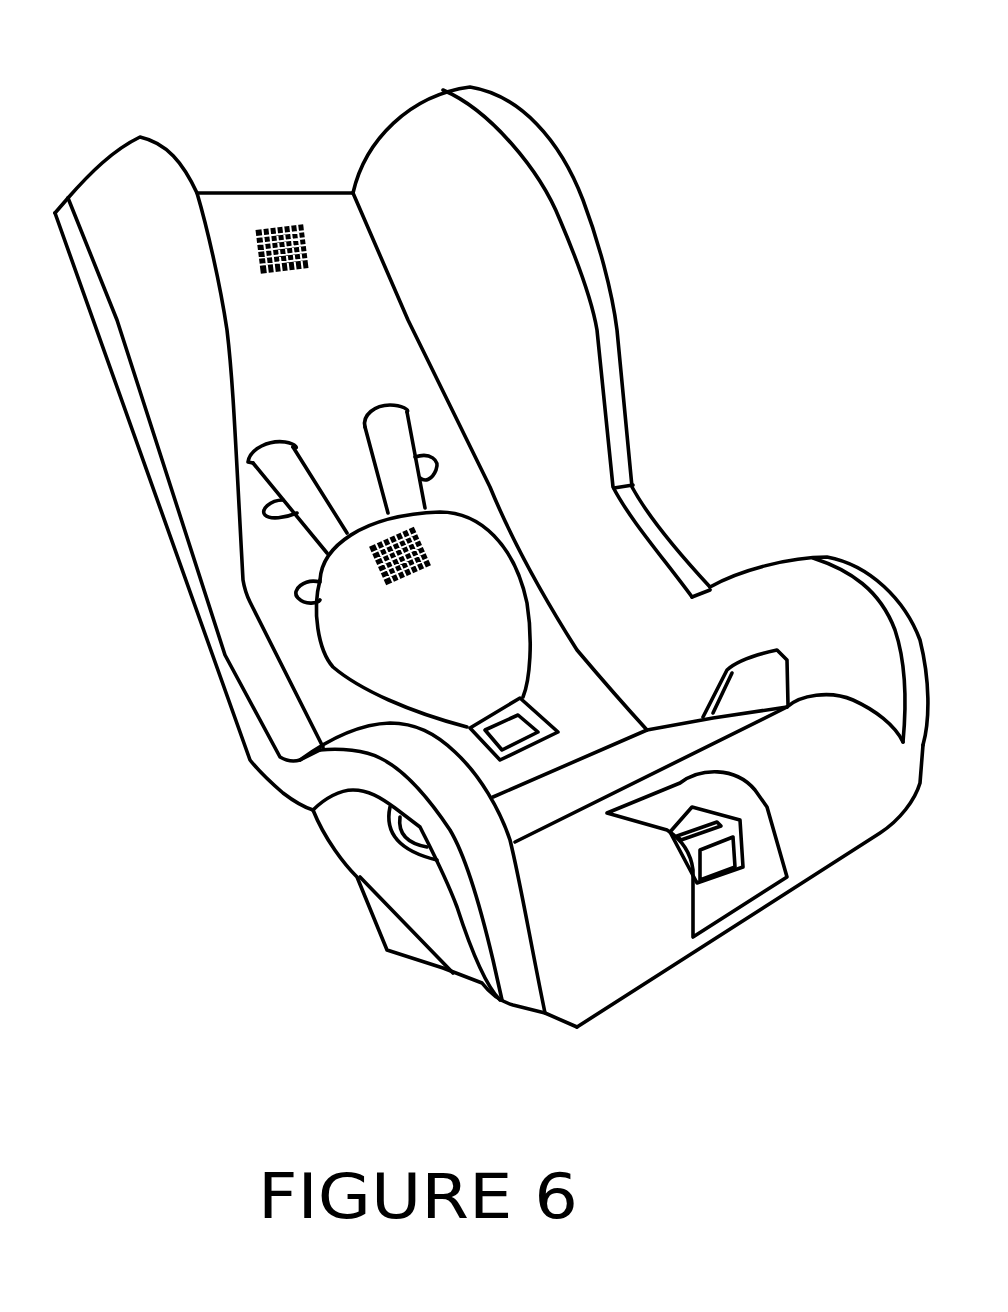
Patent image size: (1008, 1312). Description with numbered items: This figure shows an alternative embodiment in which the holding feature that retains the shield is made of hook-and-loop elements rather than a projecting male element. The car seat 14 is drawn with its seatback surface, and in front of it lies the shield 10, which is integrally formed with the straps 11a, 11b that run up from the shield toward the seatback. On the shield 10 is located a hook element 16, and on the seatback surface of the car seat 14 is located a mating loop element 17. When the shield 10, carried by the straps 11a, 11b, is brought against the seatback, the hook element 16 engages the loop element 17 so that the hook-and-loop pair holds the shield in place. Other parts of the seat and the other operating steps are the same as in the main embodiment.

The shield 10 is at (330, 657).
The strap 11a is at (318, 482).
The strap 11b is at (368, 463).
The car seat 14 is at (468, 84).
The hook element 16 is at (420, 577).
The loop element 17 is at (287, 278).